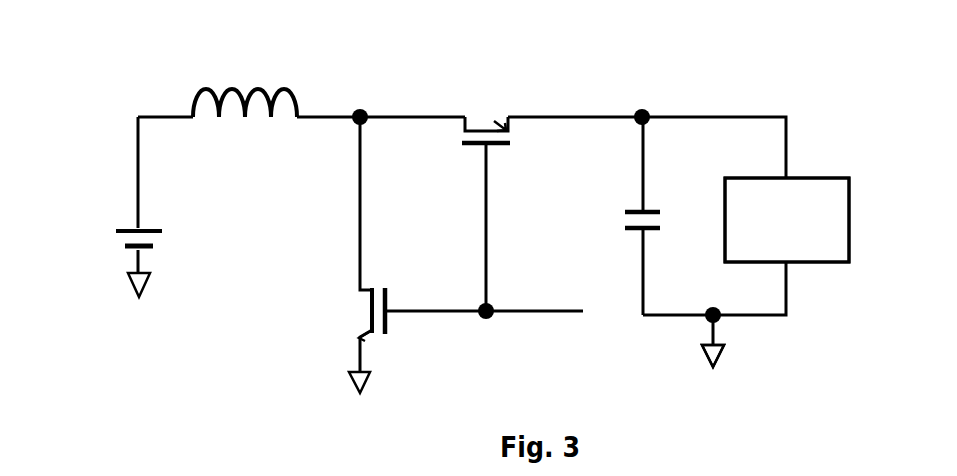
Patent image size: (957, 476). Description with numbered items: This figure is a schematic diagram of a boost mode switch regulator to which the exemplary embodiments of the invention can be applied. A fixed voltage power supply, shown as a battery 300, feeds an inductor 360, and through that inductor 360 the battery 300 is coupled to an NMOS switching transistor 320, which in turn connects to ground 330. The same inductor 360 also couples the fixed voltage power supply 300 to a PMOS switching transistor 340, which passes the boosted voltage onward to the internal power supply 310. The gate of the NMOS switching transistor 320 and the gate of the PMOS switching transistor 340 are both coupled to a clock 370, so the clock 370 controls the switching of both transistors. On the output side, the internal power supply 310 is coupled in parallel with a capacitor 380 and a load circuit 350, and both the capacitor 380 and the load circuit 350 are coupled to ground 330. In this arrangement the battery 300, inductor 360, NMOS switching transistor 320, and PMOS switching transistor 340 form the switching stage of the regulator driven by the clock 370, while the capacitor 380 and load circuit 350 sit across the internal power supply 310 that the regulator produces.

The fixed voltage power supply 300 is at (115, 243).
The internal power supply 310 is at (660, 84).
The NMOS switching transistor 320 is at (368, 285).
The ground 330 is at (368, 385).
The PMOS switching transistor 340 is at (478, 83).
The load circuit 350 is at (882, 170).
The inductor 360 is at (281, 86).
The clock 370 is at (495, 317).
The capacitor 380 is at (630, 208).